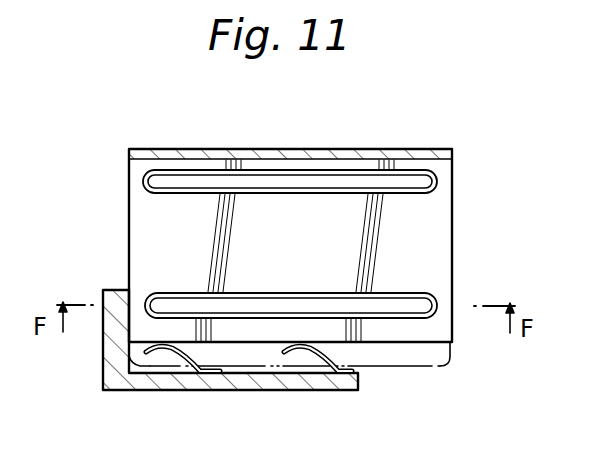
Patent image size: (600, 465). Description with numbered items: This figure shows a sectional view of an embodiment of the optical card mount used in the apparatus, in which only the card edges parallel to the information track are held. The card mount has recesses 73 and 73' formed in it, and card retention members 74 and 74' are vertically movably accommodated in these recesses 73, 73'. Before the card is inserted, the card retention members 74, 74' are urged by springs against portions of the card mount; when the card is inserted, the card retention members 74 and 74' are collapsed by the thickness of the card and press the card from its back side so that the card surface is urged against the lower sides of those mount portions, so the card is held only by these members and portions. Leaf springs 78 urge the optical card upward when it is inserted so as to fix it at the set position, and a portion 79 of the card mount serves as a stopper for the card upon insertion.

The recess 73 is at (295, 216).
The card retention member 74 is at (290, 142).
The card retention member 74' is at (291, 349).
The recess 73' is at (309, 362).
The leaf spring 78 is at (178, 357).
The stopper portion of card mount 79 is at (117, 330).